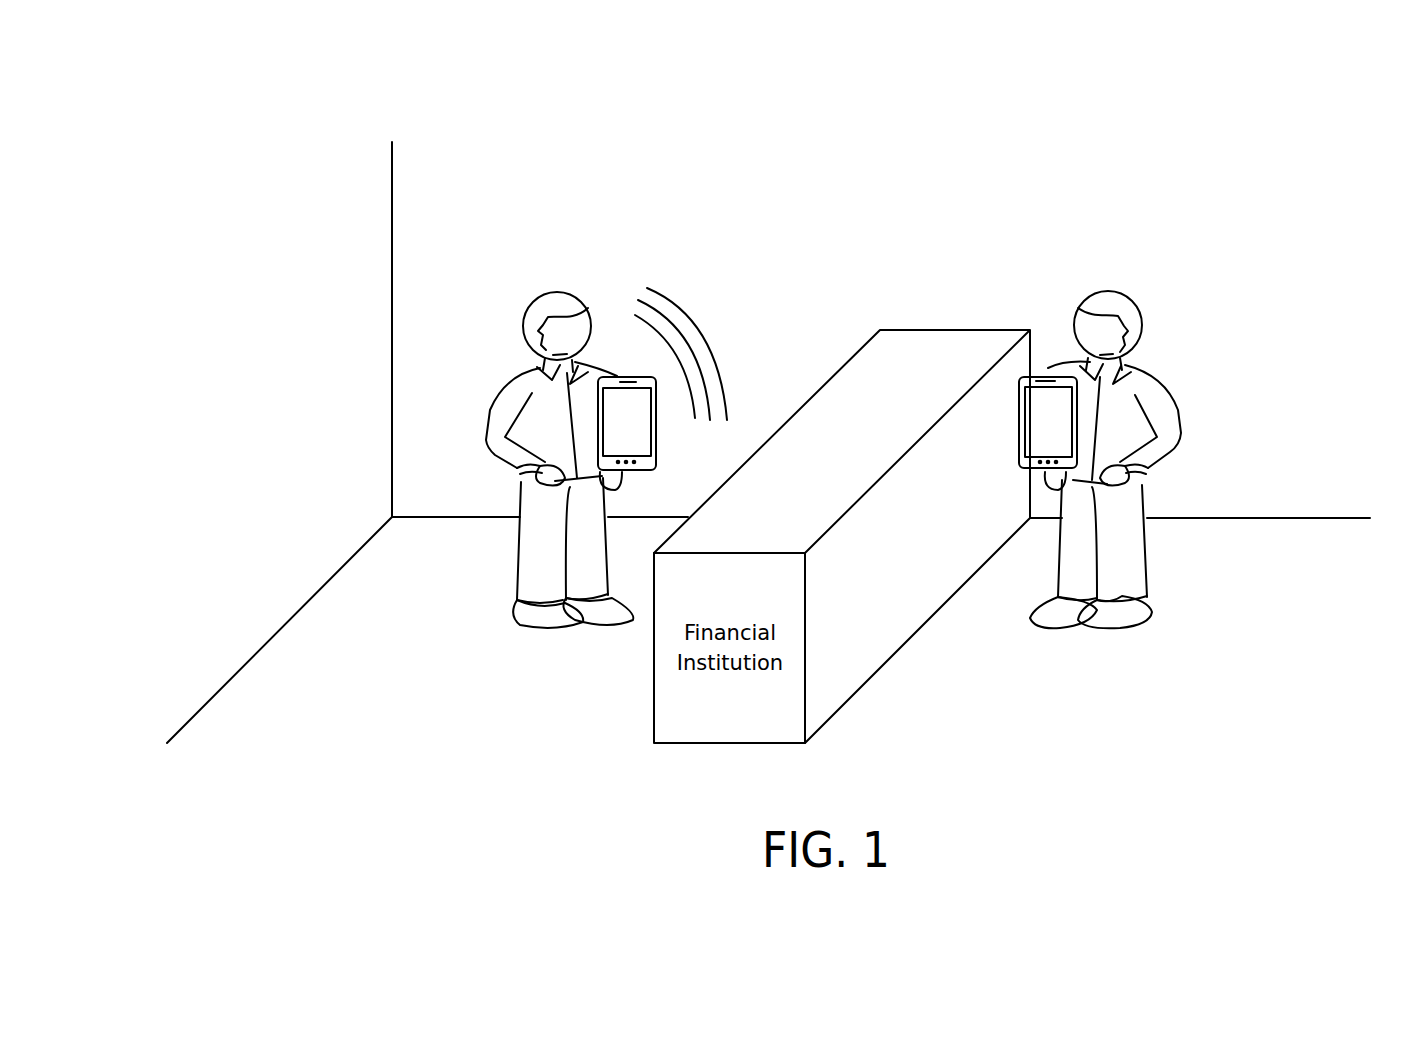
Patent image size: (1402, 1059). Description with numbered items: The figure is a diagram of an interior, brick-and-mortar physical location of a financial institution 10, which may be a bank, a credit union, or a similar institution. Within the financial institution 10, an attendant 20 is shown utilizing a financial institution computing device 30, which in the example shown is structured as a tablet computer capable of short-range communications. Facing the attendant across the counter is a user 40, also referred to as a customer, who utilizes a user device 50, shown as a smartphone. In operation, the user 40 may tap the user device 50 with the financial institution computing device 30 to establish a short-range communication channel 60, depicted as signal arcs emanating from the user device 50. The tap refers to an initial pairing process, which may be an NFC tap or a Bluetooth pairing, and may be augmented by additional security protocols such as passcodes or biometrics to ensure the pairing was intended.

The financial institution 10 is at (592, 82).
The attendant 20 is at (1113, 304).
The financial institution computing device 30 is at (1048, 388).
The user 40 is at (551, 302).
The user device 50 is at (621, 402).
The short-range communication channel 60 is at (647, 288).